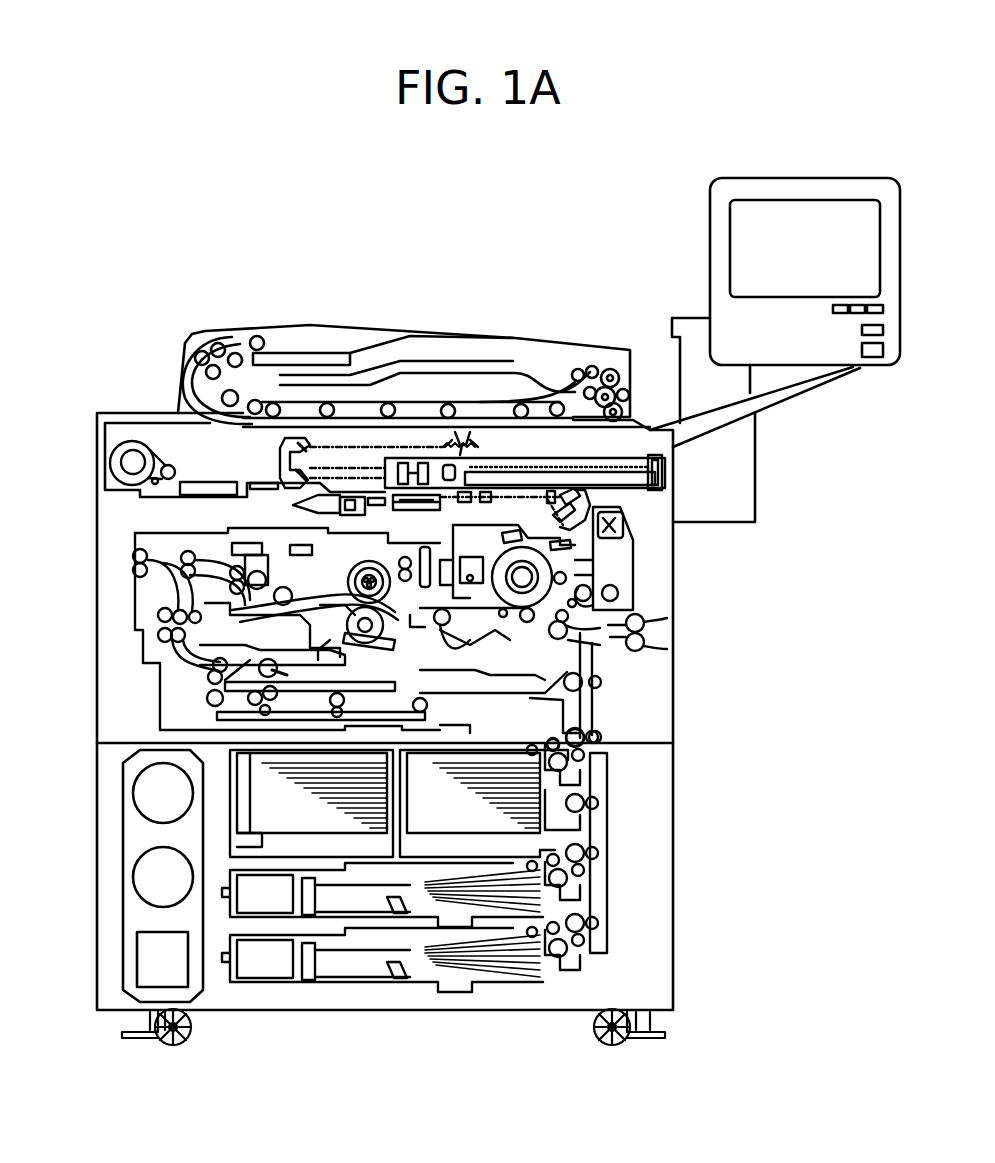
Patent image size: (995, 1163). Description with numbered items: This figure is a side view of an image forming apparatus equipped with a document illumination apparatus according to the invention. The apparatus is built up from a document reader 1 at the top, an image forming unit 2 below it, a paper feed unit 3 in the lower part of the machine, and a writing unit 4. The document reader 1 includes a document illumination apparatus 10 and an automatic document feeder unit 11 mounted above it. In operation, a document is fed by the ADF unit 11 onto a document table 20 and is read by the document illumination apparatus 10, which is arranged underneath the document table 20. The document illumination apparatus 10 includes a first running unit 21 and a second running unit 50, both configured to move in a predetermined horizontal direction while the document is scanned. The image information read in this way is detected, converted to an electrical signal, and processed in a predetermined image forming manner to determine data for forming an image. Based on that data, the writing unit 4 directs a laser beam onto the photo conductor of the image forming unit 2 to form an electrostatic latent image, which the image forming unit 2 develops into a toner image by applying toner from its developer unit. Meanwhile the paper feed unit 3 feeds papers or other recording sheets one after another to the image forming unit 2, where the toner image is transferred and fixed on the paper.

The document reader 1 is at (82, 440).
The automatic document feeder (ADF) unit 11 is at (365, 320).
The first running unit 21 is at (428, 416).
The document table 20 is at (495, 418).
The document illumination apparatus 10 is at (250, 458).
The second running unit 50 is at (265, 475).
The writing unit 4 is at (600, 497).
The image forming unit 2 is at (640, 597).
The paper feed unit 3 is at (618, 858).